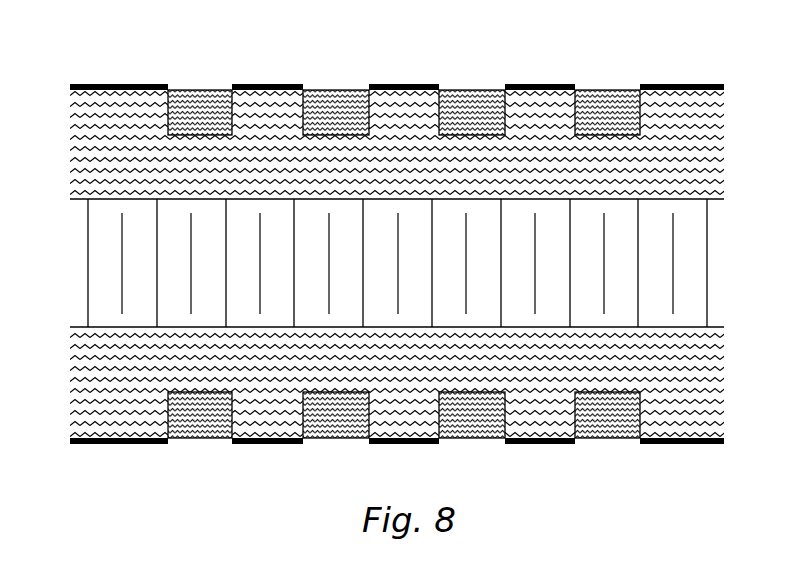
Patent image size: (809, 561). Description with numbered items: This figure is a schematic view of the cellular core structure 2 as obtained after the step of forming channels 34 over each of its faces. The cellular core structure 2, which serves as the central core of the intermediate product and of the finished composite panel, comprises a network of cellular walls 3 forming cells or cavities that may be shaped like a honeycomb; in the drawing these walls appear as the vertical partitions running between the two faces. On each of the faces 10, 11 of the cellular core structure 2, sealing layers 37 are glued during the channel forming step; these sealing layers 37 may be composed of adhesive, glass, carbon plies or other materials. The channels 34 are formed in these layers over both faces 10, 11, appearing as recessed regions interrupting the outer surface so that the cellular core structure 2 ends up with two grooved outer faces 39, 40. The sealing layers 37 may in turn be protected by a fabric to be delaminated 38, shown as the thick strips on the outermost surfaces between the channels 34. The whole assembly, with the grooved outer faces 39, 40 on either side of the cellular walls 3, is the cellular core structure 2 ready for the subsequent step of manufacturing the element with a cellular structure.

The cellular core structure 2 is at (88, 262).
The cellular walls 3 is at (708, 265).
The face 10 is at (698, 332).
The face 11 is at (696, 198).
The channels 34 is at (468, 114).
The sealing layers 37 is at (90, 140).
The fabric to be delaminated 38 is at (118, 82).
The grooved outer face 39 is at (268, 446).
The grooved outer face 40 is at (267, 80).